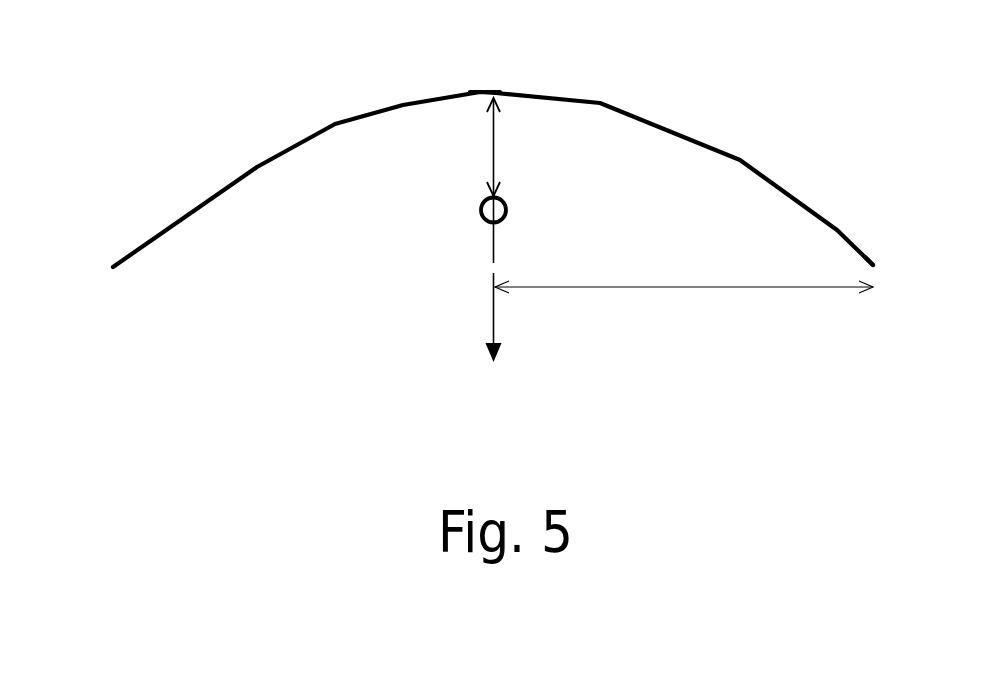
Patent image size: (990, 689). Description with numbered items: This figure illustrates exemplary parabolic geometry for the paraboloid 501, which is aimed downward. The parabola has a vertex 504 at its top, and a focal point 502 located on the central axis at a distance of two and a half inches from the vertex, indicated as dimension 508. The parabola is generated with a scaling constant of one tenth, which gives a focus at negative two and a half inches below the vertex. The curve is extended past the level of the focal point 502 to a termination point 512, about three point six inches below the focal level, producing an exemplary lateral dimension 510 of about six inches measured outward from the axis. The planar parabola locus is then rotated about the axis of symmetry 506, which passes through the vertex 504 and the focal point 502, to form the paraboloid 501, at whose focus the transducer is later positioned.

The paraboloid 501 is at (334, 124).
The vertex 504 is at (507, 92).
The dimension 508 is at (492, 145).
The focal point 502 is at (480, 207).
The axis of symmetry 506 is at (492, 312).
The lateral dimension 510 is at (762, 292).
The termination point 512 is at (875, 267).